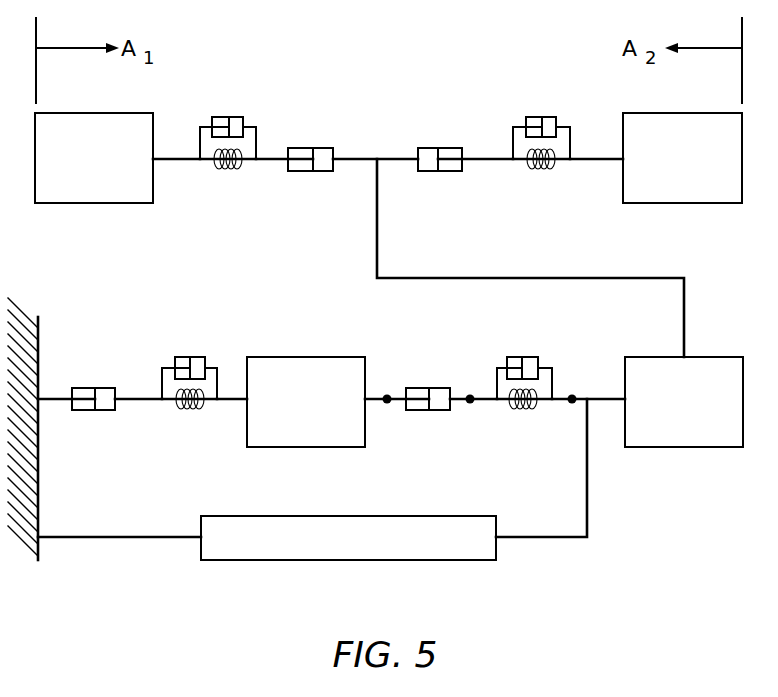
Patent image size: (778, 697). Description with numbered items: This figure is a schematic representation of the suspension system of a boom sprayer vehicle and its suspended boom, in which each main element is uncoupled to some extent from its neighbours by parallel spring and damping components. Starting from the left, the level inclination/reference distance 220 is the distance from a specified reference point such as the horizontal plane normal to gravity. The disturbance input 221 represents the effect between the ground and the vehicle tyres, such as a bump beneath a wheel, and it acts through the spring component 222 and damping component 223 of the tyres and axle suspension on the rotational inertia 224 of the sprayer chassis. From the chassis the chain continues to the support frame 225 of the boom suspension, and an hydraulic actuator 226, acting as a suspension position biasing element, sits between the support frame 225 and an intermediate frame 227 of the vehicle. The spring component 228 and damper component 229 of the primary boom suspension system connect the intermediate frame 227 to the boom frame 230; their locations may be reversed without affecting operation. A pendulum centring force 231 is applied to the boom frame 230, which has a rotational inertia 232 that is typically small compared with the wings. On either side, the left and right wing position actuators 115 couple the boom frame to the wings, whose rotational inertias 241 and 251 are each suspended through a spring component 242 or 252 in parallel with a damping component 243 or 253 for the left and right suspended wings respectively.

The wing position actuators 115 is at (300, 147).
The level inclination/reference distance 220 is at (40, 462).
The disturbance input 221 is at (78, 386).
The spring component of tyres and axle suspension 222 is at (190, 412).
The damping component of tyres and axle suspension 223 is at (190, 355).
The rotational inertia of sprayer chassis 224 is at (302, 355).
The support frame 225 is at (387, 405).
The hydraulic actuator 226 is at (424, 386).
The intermediate frame 227 is at (470, 405).
The spring component of primary boom suspension 228 is at (523, 412).
The damper component of primary boom suspension 229 is at (522, 355).
The boom frame 230 is at (573, 393).
The pendulum centring force 231 is at (340, 562).
The rotational inertia of boom frame 232 is at (685, 449).
The rotational inertia of left boom wing 241 is at (90, 205).
The spring component of left suspended wing 242 is at (228, 172).
The damping component of left suspended wing 243 is at (229, 115).
The rotational inertia of right boom wing 251 is at (680, 205).
The spring component of right suspended wing 252 is at (540, 172).
The damping component of right suspended wing 253 is at (542, 115).